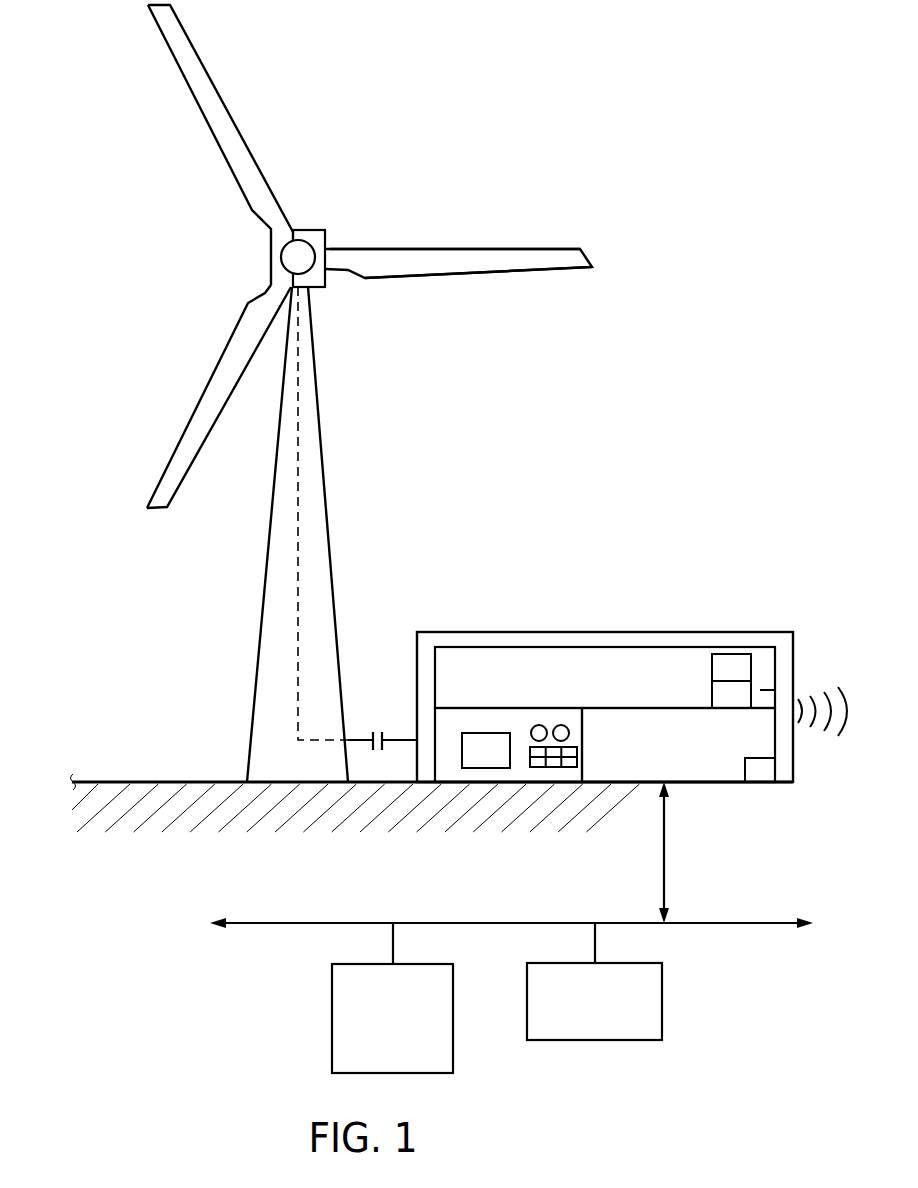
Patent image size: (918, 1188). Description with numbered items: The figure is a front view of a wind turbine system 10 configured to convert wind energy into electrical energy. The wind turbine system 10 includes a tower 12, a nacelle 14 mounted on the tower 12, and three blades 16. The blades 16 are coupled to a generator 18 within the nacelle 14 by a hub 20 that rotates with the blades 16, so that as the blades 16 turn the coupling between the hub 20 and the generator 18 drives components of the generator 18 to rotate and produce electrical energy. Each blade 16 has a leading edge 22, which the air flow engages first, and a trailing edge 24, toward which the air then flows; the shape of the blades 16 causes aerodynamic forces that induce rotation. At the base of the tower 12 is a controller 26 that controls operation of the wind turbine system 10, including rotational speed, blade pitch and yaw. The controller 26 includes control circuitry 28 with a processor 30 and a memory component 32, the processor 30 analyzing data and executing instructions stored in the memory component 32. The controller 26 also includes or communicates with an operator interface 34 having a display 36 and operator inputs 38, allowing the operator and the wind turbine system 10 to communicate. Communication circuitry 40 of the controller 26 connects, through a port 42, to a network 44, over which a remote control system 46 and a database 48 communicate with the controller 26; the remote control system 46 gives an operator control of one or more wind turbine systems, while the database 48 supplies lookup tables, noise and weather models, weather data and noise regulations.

The wind turbine system 10 is at (388, 132).
The tower 12 is at (328, 508).
The nacelle 14 is at (298, 230).
The blades 16 is at (218, 131).
The generator 18 is at (316, 238).
The hub 20 is at (290, 258).
The leading edge 22 is at (480, 248).
The trailing edge 24 is at (490, 276).
The controller 26 is at (445, 632).
The control circuitry 28 is at (548, 647).
The processor 30 is at (740, 655).
The memory component 32 is at (752, 690).
The operator interface 34 is at (448, 768).
The display 36 is at (485, 768).
The operator inputs 38 is at (568, 768).
The communication circuitry 40 is at (683, 788).
The port 42 is at (768, 772).
The network 44 is at (758, 920).
The remote control system 46 is at (332, 1022).
The database 48 is at (665, 1000).